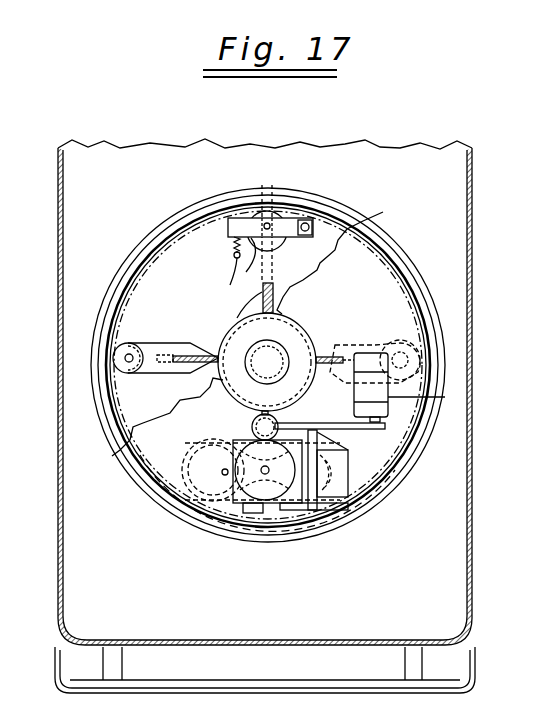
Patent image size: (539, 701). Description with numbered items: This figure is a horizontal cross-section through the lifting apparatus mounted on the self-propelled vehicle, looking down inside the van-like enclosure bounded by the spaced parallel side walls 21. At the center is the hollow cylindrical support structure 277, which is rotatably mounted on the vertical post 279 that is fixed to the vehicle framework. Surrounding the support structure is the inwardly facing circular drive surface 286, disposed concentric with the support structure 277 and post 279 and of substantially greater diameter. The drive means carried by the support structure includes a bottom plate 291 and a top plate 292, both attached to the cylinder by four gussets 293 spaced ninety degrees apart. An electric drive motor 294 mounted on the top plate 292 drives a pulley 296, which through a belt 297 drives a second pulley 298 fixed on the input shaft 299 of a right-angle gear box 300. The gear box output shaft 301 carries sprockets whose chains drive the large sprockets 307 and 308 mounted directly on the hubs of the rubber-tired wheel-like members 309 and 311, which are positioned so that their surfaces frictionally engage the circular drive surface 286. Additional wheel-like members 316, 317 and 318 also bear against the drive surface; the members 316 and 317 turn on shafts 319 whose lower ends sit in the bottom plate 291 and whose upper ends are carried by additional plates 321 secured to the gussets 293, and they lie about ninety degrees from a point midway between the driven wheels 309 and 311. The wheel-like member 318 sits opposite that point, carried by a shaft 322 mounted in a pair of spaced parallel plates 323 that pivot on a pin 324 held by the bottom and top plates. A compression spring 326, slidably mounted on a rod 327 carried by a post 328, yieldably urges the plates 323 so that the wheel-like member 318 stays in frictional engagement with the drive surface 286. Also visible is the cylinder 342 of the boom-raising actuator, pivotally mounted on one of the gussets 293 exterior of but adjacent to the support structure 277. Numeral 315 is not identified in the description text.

The side walls 21 is at (58, 566).
The support structure 277 is at (302, 333).
The vertical post 279 is at (288, 341).
The circular drive surface 286 is at (410, 341).
The bottom plate 291 is at (213, 284).
The top plate 292 is at (222, 424).
The gussets 293 is at (226, 335).
The electric drive motor 294 is at (445, 397).
The pulley 296 is at (340, 462).
The belt 297 is at (333, 445).
The pulley 298 is at (298, 420).
The input shaft 299 is at (290, 400).
The right-angle gear box 300 is at (250, 514).
The output shaft 301 is at (268, 478).
The large sprocket 307 is at (182, 520).
The large sprocket 308 is at (348, 515).
The wheel-like member 309 is at (330, 466).
The wheel-like member 311 is at (200, 455).
The pin 315 is at (222, 472).
The wheel-like member 316 is at (410, 380).
The wheel-like member 317 is at (133, 375).
The wheel-like member 318 is at (276, 211).
The shafts 319 is at (133, 338).
The additional plates 321 is at (160, 348).
The shaft 322 is at (267, 224).
The plates 323 is at (292, 222).
The pin 324 is at (302, 233).
The compression spring 326 is at (234, 249).
The rod 327 is at (253, 262).
The post 328 is at (225, 280).
The cylinder 342 is at (252, 422).